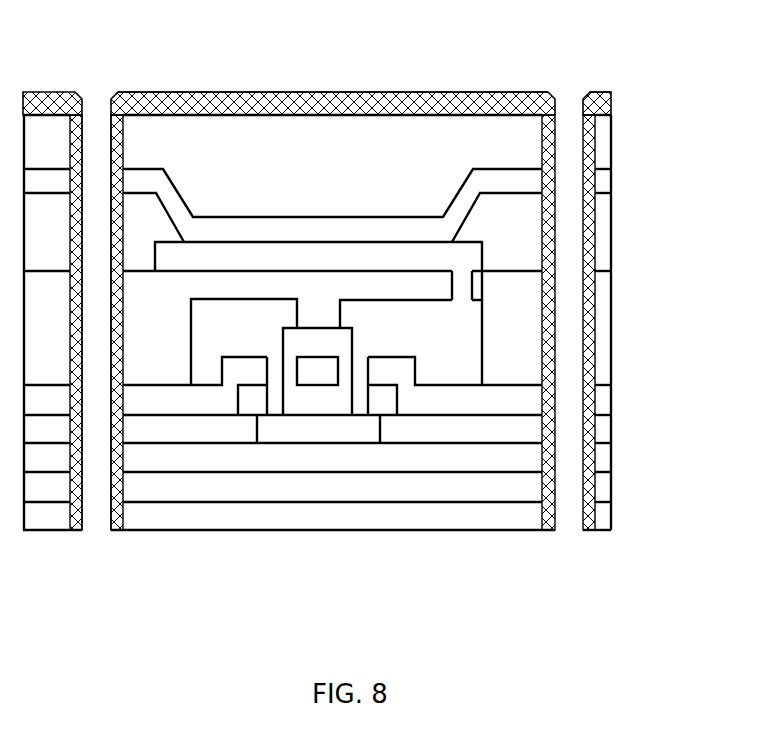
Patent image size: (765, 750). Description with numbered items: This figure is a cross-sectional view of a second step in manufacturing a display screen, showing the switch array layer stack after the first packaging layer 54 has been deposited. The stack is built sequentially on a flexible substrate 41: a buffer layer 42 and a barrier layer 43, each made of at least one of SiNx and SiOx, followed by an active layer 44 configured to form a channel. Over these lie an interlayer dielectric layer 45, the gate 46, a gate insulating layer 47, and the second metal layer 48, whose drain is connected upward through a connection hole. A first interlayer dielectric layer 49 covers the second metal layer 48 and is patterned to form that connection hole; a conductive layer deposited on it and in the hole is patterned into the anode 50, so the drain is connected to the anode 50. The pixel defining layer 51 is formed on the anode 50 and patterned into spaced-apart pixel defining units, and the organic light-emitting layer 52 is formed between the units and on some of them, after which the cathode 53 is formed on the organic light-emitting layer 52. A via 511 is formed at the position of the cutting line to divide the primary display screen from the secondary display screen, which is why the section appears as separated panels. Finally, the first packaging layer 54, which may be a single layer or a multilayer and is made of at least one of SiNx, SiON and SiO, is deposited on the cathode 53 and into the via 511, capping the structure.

The flexible substrate 41 is at (613, 517).
The buffer layer 42 is at (613, 487).
The barrier layer 43 is at (613, 458).
The active layer 44 is at (305, 425).
The interlayer dielectric layer 45 is at (613, 428).
The gate 46 is at (318, 365).
The gate insulating layer 47 is at (613, 402).
The second metal layer 48 is at (223, 337).
The first interlayer dielectric layer 49 is at (613, 288).
The anode 50 is at (458, 257).
The pixel defining layer 51 is at (613, 237).
The via 511 is at (100, 140).
The organic light-emitting layer 52 is at (613, 185).
The cathode 53 is at (613, 158).
The first packaging layer 54 is at (613, 105).